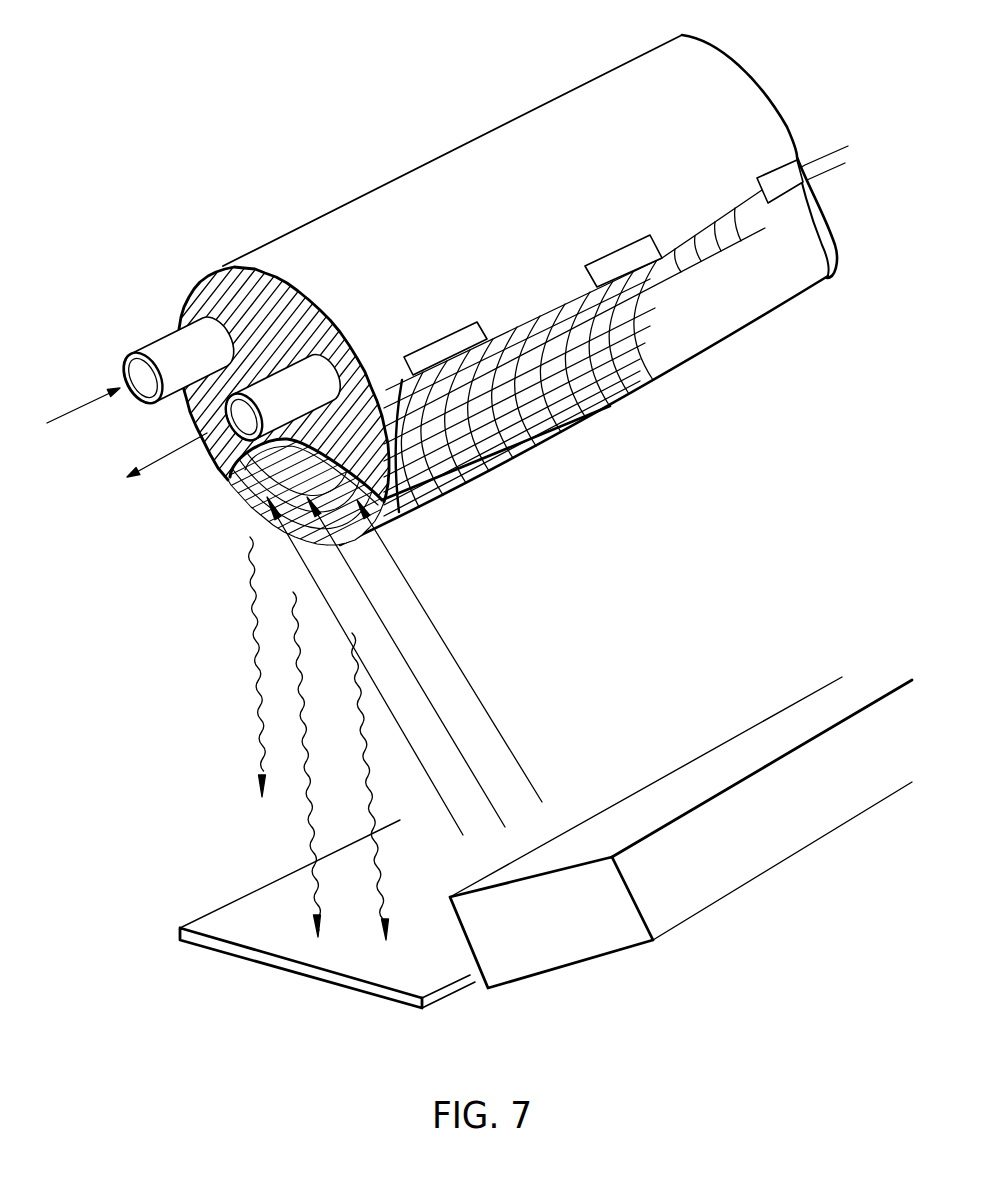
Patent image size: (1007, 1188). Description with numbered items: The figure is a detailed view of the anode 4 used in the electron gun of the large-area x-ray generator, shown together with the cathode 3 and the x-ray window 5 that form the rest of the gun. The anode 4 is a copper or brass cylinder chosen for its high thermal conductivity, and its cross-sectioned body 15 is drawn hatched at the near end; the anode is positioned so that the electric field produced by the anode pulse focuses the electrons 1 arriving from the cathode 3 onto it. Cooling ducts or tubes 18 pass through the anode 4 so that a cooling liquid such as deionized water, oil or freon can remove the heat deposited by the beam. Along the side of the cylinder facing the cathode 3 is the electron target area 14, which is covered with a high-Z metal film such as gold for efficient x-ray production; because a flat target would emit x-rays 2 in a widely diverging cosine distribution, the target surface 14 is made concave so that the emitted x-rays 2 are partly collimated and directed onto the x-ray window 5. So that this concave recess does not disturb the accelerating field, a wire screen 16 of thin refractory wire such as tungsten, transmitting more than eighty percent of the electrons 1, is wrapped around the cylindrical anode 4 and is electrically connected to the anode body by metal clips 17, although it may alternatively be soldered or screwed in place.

The electrons 1 is at (445, 600).
The x-rays 2 is at (331, 746).
The cathode 3 is at (733, 857).
The anode 4 is at (405, 183).
The window 5 is at (223, 948).
The electron target area 14 is at (230, 477).
The anode body end face 15 is at (310, 297).
The wire screen 16 is at (510, 463).
The metal clips 17 is at (451, 330).
The cooling ducts or tubes 18 is at (137, 348).